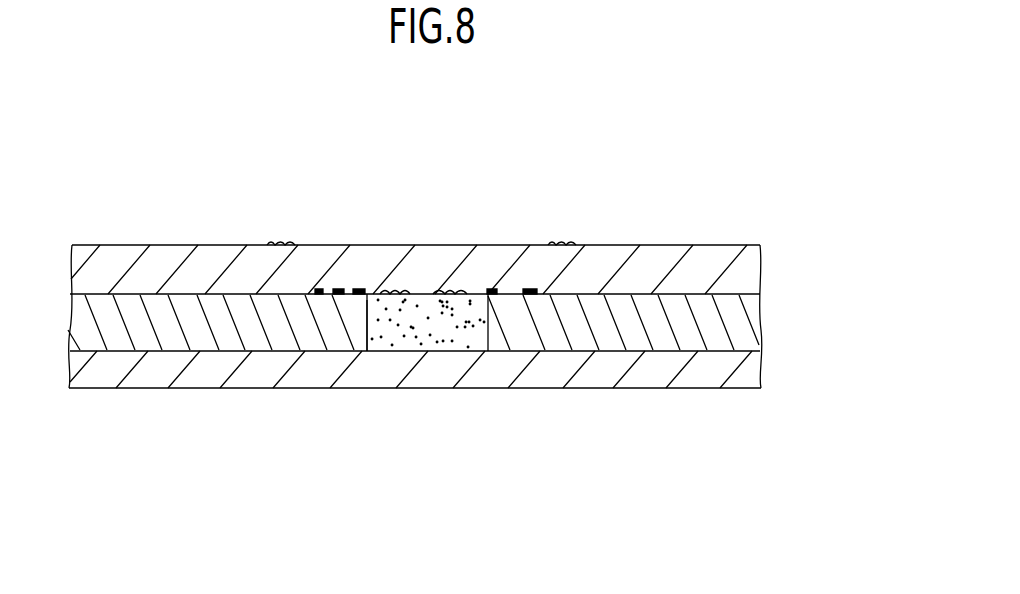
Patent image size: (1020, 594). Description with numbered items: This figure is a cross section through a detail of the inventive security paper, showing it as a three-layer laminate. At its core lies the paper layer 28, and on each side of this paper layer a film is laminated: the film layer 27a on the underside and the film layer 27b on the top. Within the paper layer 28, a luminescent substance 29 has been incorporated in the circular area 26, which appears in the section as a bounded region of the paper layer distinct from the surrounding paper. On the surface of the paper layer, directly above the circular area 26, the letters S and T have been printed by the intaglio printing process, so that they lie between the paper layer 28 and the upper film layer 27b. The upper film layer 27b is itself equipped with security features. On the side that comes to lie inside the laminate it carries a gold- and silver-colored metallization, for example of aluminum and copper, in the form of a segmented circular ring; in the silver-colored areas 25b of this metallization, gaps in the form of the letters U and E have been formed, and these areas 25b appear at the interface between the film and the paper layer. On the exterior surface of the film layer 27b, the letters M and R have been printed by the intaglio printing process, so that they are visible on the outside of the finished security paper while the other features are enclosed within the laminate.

The film layer 27b is at (743, 273).
The paper layer 28 is at (740, 325).
The film layer 27a is at (750, 370).
The circular area 26 is at (448, 342).
The luminescent substance 29 is at (373, 340).
The silver-colored areas 25b is at (334, 290).
The letter M is at (284, 241).
The letter R is at (564, 241).
The letter S is at (396, 290).
The letter T is at (451, 290).